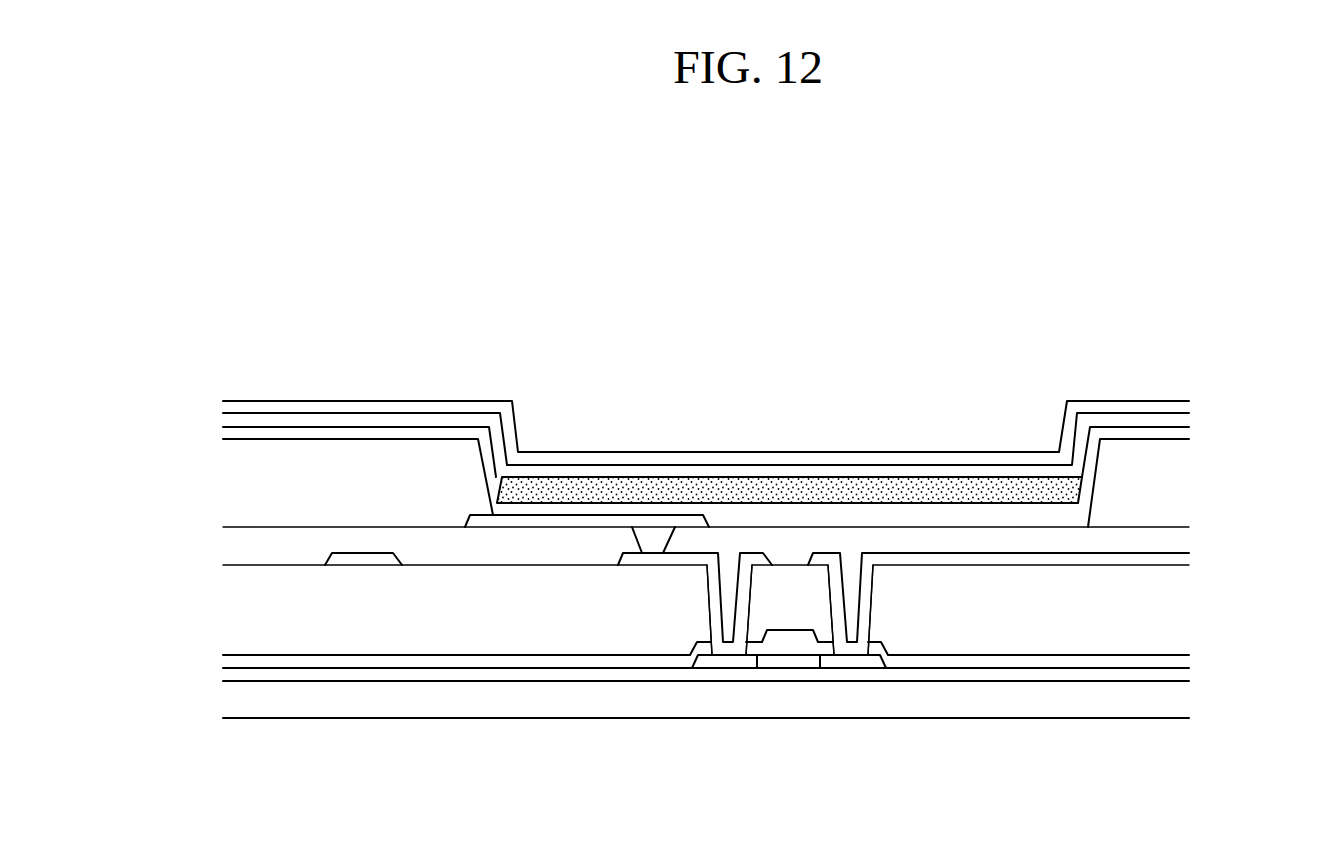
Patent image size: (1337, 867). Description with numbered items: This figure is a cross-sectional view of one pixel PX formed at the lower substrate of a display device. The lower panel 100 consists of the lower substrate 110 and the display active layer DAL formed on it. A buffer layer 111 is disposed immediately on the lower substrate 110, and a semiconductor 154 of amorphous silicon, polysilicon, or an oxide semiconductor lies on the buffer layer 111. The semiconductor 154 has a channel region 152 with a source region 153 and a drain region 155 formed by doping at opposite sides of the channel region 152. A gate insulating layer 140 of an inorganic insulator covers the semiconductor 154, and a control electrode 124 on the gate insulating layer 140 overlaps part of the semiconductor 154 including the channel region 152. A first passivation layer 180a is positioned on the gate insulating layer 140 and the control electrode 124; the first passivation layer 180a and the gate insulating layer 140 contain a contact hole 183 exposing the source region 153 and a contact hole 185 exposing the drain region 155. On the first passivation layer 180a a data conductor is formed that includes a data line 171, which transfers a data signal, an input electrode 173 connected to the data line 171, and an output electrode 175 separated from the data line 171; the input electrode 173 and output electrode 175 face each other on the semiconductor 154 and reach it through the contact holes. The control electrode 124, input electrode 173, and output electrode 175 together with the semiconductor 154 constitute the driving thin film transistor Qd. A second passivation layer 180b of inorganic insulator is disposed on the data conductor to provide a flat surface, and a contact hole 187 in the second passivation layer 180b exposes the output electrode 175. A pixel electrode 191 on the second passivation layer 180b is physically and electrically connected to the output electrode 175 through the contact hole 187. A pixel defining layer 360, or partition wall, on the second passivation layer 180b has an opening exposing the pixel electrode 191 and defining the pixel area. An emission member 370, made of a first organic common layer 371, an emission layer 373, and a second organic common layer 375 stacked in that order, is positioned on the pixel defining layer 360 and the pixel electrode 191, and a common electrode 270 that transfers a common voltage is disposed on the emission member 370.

The lower panel 100 is at (768, 507).
The lower substrate 110 is at (445, 705).
The buffer layer 111 is at (510, 673).
The control electrode 124 is at (785, 633).
The gate insulating layer 140 is at (990, 660).
The channel region 152 is at (790, 660).
The source region 153 is at (853, 714).
The semiconductor 154 is at (789, 737).
The drain region 155 is at (728, 660).
The data line 171 is at (367, 558).
The input electrode 173 is at (928, 558).
The output electrode 175 is at (653, 558).
The first passivation layer 180a is at (1115, 630).
The second passivation layer 180b is at (1052, 540).
The contact hole 183 is at (862, 600).
The contact hole 185 is at (710, 600).
The contact hole 187 is at (665, 552).
The pixel electrode 191 is at (580, 520).
The common electrode 270 is at (402, 408).
The pixel defining layer 360 is at (332, 467).
The emission member 370 is at (706, 389).
The first organic common layer 371 is at (975, 515).
The emission layer 373 is at (1010, 487).
The second organic common layer 375 is at (1040, 468).
The pixel PX is at (572, 270).
The driving thin film transistor Qd is at (803, 541).
The display active layer DAL is at (1198, 400).